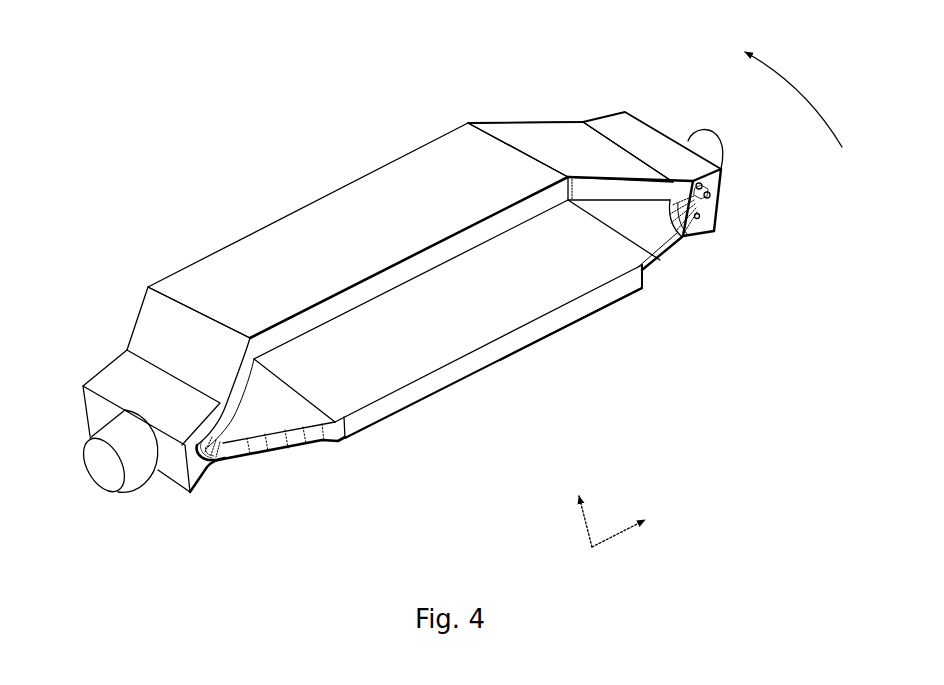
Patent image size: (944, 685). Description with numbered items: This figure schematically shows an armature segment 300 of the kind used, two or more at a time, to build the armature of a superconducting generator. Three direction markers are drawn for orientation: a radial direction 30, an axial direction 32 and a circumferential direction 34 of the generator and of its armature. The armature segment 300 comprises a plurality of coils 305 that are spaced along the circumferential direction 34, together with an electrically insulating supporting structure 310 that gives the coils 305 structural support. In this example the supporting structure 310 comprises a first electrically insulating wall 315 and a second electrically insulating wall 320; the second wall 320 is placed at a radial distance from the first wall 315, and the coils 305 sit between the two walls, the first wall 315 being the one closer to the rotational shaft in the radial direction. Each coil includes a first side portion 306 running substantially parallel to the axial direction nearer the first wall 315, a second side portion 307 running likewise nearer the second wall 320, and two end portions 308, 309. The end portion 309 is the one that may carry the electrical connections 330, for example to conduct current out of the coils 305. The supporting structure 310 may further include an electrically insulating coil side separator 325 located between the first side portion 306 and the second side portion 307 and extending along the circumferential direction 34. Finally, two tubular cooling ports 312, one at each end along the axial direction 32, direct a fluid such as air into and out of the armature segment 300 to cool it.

The armature segment 300 is at (104, 278).
The coils 305 is at (285, 438).
The first side portion 306 is at (437, 391).
The second side portion 307 is at (327, 312).
The end portion 308 is at (205, 449).
The end portion 309 is at (692, 238).
The electrically insulating supporting structure 310 is at (548, 142).
The cooling ports 312 is at (125, 455).
The first electrically insulating wall 315 is at (545, 339).
The second electrically insulating wall 320 is at (378, 195).
The electrically insulating coil side separator 325 is at (573, 280).
The electrical connections 330 is at (700, 215).
The radial direction 30 is at (563, 521).
The axial direction 32 is at (638, 534).
The circumferential direction 34 is at (793, 99).